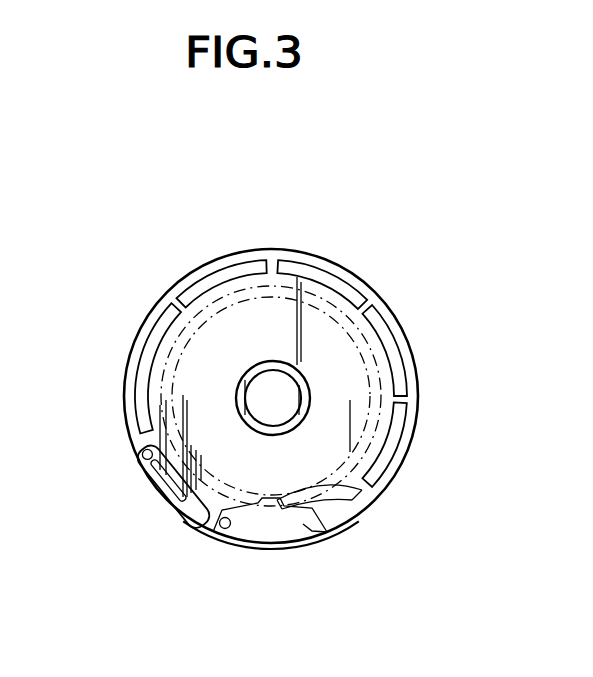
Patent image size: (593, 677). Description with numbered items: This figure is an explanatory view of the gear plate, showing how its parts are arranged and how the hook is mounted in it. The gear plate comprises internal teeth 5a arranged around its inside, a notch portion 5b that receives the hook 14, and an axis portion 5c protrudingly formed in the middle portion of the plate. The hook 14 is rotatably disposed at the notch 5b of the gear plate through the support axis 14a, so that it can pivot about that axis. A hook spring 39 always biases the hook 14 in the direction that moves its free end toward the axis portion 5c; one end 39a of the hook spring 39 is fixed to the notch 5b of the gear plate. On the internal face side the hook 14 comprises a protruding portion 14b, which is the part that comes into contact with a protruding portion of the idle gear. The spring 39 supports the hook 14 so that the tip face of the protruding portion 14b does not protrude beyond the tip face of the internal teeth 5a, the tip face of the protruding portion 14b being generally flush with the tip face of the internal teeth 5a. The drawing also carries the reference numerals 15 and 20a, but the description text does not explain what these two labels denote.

The internal teeth 5a is at (213, 321).
The notch portion 5b is at (281, 556).
The axis portion 5c is at (310, 402).
The hook 14 is at (320, 540).
The support axis 14a is at (226, 530).
The protruding portion 14b is at (345, 500).
The cylinder housing 15 is at (423, 422).
The elongated slot 20a is at (157, 473).
The hook spring 39 is at (192, 522).
The one end of hook spring 39a is at (142, 458).